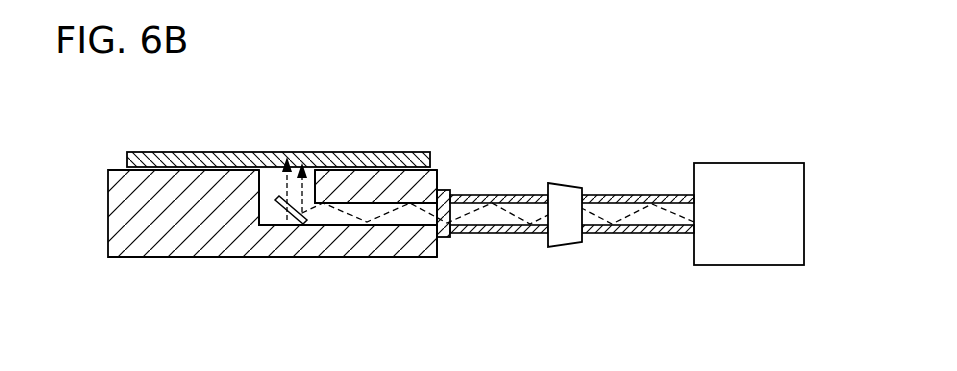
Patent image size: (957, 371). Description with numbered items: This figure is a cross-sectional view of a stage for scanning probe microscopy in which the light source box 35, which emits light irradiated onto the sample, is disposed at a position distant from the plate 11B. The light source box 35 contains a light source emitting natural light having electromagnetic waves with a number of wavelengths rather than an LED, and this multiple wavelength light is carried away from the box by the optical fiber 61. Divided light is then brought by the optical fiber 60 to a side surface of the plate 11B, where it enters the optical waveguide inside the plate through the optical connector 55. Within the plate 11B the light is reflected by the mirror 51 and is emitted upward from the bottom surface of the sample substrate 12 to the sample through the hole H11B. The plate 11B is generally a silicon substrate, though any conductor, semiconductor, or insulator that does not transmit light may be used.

The plate 11B is at (108, 210).
The hole H11B is at (260, 206).
The sample substrate 12 is at (127, 157).
The mirror 51 is at (290, 217).
The optical connector 55 is at (437, 238).
The optical fiber 60 is at (500, 195).
The optical fiber 61 is at (625, 195).
The light source box 35 is at (720, 163).